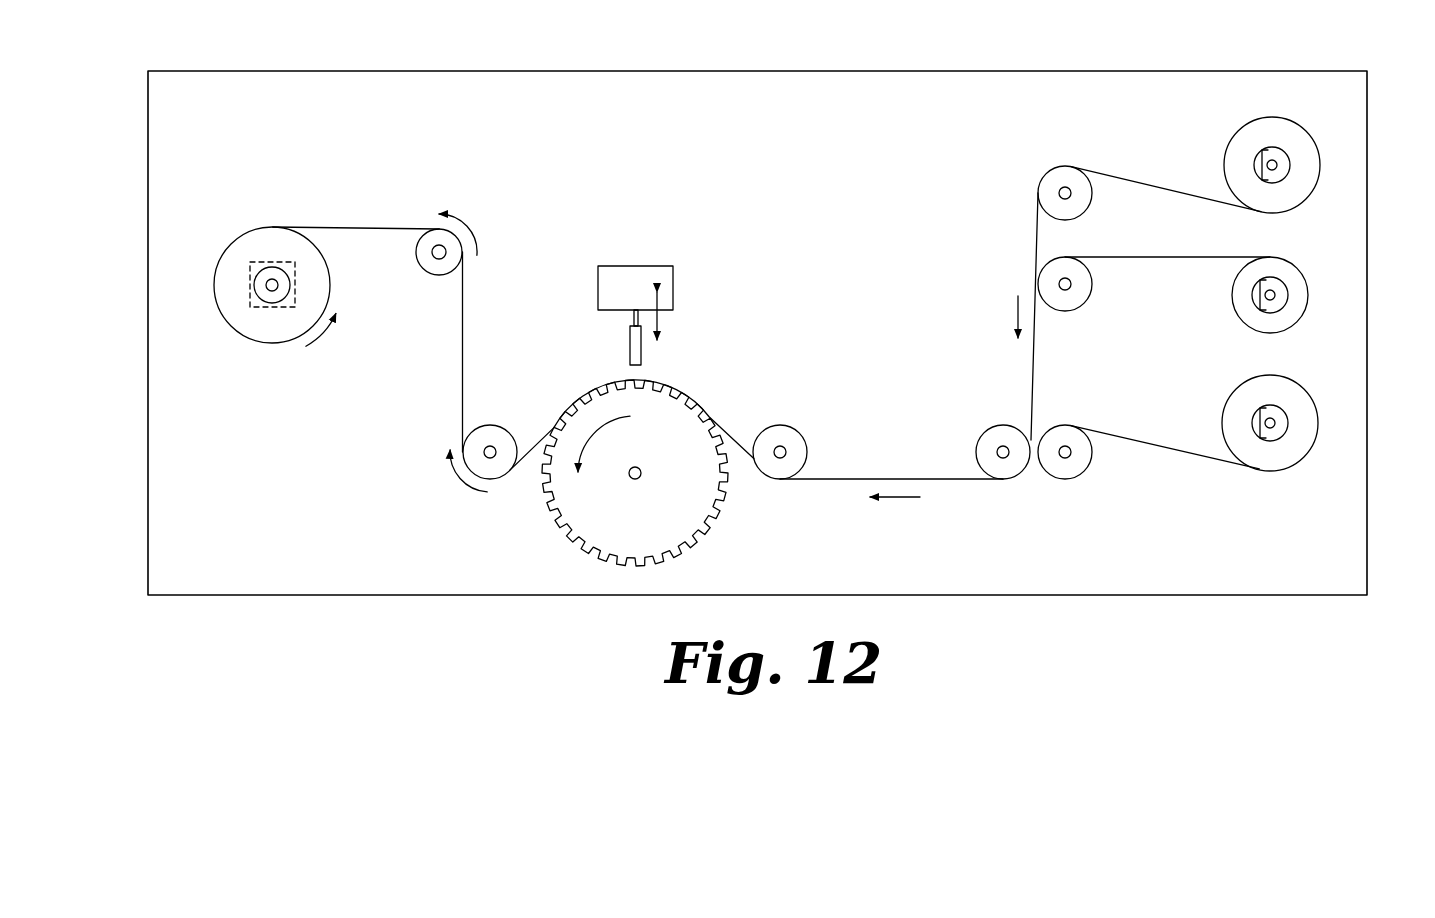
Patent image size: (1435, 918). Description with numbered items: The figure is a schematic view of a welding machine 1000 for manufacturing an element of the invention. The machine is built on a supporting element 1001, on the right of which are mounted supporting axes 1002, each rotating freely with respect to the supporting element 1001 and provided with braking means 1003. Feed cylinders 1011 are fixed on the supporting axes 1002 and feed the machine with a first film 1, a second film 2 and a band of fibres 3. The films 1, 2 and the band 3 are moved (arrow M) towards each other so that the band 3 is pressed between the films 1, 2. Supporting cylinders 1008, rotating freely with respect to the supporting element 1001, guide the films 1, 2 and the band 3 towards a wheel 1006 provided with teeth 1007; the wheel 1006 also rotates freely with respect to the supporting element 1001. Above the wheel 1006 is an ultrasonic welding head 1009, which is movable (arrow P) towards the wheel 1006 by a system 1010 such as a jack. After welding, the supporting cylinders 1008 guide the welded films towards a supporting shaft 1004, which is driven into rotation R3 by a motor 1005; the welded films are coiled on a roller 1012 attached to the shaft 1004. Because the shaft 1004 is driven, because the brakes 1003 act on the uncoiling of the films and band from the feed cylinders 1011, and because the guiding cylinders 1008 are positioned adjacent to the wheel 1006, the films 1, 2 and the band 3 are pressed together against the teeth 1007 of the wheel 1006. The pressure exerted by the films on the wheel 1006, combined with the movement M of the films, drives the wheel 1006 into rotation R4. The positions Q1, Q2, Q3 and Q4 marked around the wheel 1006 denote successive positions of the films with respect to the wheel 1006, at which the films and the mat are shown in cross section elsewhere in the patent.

The machine 1000 is at (990, 58).
The supporting element 1001 is at (1150, 85).
The supporting axis 1002 is at (1277, 165).
The braking means 1003 is at (1270, 147).
The supporting shaft 1004 is at (278, 285).
The motor 1005 is at (268, 304).
The wheel 1006 is at (678, 522).
The teeth 1007 is at (575, 545).
The supporting cylinders 1008 is at (798, 445).
The welding head 1009 is at (631, 350).
The system 1010 is at (628, 278).
The feed cylinders 1011 is at (1300, 185).
The roller 1012 is at (266, 266).
The film 1 is at (1158, 192).
The film 2 is at (1153, 452).
The band of fibres 3 is at (1138, 260).
The movement of the films M is at (895, 497).
The movement of the welding head P is at (658, 325).
The position Q1 is at (705, 420).
The position Q2 is at (666, 392).
The position Q3 is at (627, 386).
The position Q4 is at (552, 425).
The rotation of the supporting shaft R3 is at (322, 338).
The rotation of the wheel R4 is at (601, 426).